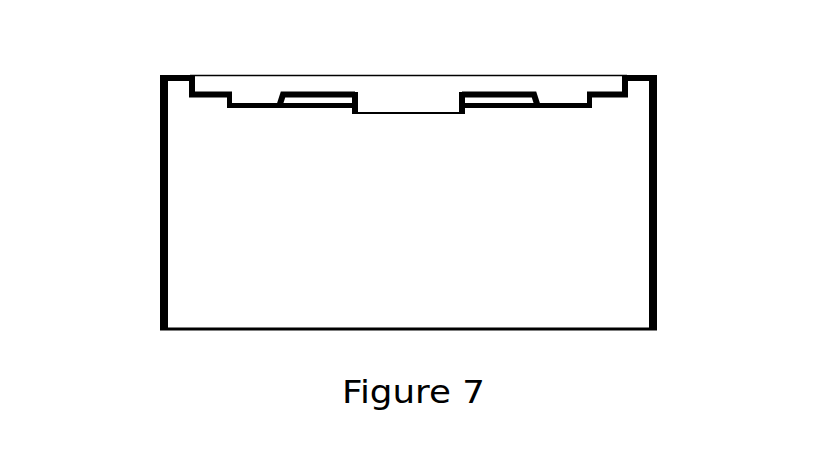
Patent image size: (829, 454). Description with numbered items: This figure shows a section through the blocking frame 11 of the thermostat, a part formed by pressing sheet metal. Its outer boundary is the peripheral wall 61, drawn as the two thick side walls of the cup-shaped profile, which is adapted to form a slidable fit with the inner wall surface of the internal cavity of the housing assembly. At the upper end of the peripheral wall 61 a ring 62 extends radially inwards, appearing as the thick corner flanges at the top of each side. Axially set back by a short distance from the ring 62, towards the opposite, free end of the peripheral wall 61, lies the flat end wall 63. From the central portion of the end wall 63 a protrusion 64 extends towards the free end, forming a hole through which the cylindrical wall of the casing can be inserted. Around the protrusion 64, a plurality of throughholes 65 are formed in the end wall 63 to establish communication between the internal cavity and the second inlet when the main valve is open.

The blocking frame 11 is at (138, 110).
The peripheral wall 61 is at (162, 243).
The ring 62 is at (643, 75).
The flat end wall 63 is at (318, 102).
The protrusion 64 is at (443, 110).
The throughholes 65 is at (253, 107).